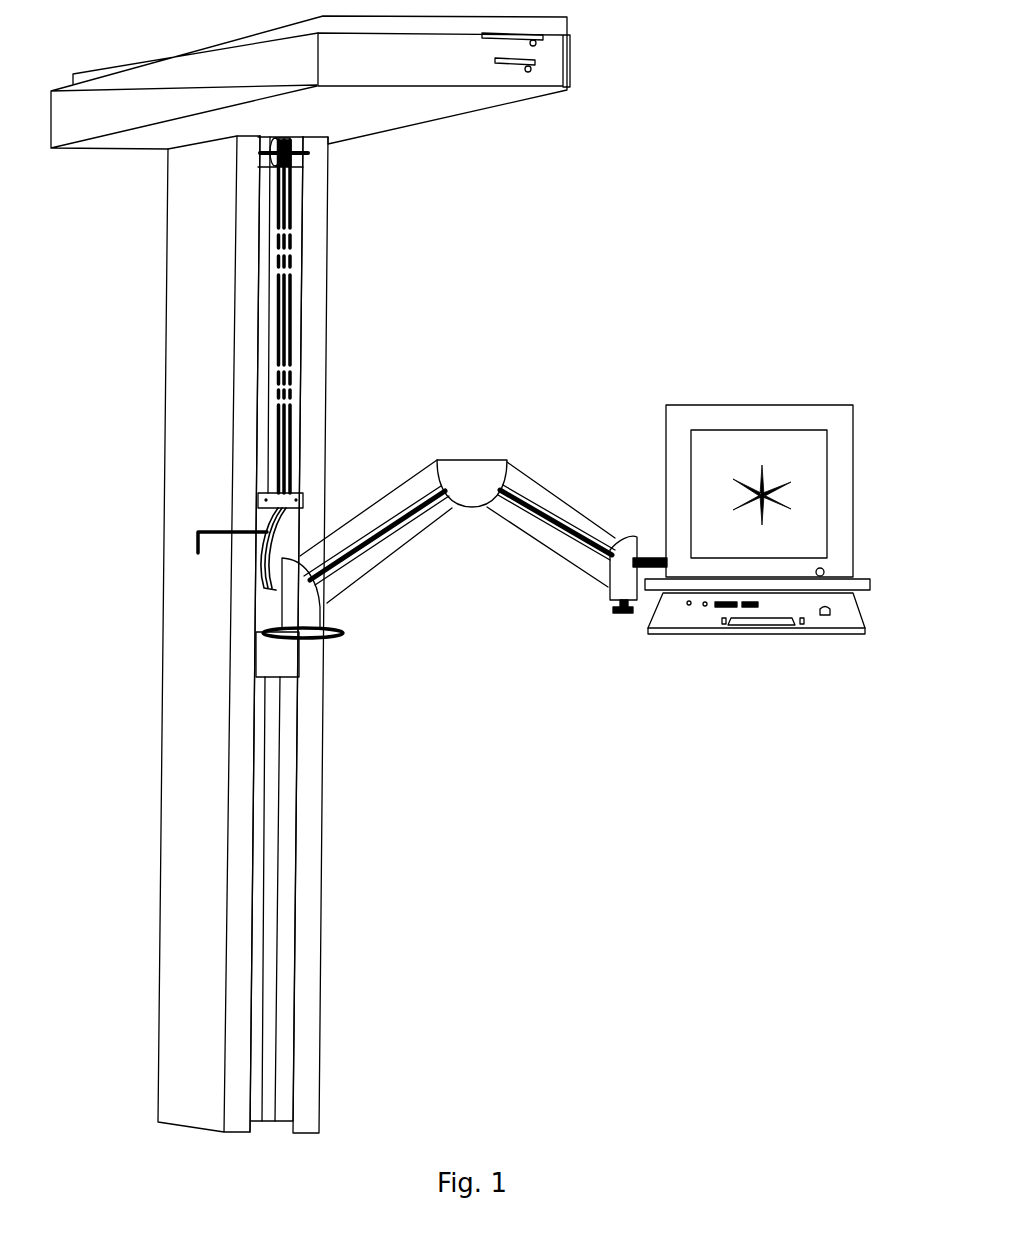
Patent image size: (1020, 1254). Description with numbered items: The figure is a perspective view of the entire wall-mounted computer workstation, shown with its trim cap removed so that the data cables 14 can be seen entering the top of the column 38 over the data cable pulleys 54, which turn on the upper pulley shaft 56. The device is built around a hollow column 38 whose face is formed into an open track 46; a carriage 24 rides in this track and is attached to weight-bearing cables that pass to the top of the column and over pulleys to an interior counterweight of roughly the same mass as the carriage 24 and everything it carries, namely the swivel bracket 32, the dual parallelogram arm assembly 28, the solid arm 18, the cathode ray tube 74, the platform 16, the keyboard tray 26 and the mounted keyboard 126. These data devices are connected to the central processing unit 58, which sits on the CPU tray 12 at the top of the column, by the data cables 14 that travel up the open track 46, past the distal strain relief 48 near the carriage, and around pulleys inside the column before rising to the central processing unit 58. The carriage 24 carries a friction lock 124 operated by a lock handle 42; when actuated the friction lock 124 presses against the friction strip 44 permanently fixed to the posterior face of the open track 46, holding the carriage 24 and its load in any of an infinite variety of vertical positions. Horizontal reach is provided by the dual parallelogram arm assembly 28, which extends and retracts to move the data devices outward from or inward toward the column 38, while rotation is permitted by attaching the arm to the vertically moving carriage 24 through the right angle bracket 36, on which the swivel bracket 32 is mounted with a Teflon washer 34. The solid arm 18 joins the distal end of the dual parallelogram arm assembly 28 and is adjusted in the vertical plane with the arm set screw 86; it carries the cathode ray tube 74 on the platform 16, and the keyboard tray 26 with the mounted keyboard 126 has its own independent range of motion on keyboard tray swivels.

The CPU tray 12 is at (417, 112).
The data cables 14 is at (293, 212).
The platform 16 is at (860, 577).
The solid arm 18 is at (650, 600).
The carriage 24 is at (265, 605).
The keyboard tray 26 is at (770, 635).
The dual parallelogram arm assembly 28 is at (533, 490).
The swivel bracket 32 is at (297, 603).
The Teflon washer 34 is at (340, 633).
The right angle bracket 36 is at (278, 657).
The column 38 is at (210, 412).
The lock handle 42 is at (197, 540).
The friction strip 44 is at (270, 811).
The open track 46 is at (290, 864).
The distal strain relief 48 is at (292, 515).
The data cable pulleys 54 is at (333, 144).
The upper pulley shaft 56 is at (262, 152).
The central processing unit 58 is at (553, 46).
The cathode ray tube 74 is at (763, 447).
The arm set screw 86 is at (613, 610).
The friction lock 124 is at (300, 500).
The mounted keyboard 126 is at (815, 615).